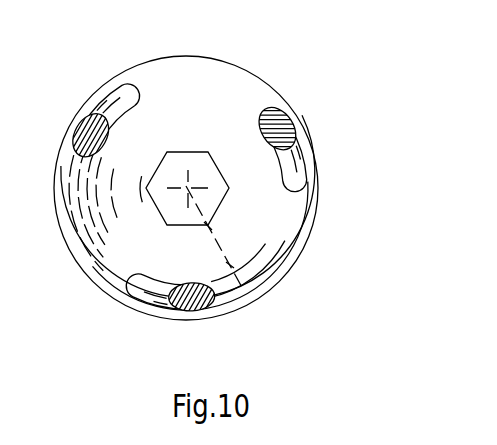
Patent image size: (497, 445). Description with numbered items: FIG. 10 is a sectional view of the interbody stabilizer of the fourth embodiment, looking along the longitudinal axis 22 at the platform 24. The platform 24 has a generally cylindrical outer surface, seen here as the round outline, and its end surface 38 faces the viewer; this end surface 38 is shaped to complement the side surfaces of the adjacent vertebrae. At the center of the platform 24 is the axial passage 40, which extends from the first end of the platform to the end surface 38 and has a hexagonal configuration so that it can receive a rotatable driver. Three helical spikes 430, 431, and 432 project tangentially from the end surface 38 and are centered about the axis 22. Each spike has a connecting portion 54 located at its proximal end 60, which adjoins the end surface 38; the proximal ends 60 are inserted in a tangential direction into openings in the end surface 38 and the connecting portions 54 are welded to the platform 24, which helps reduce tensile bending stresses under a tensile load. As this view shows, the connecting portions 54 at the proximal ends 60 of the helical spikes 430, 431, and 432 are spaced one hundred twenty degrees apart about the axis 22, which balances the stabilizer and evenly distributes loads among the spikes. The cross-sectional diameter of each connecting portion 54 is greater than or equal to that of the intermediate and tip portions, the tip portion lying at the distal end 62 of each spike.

The longitudinal axis 22 is at (244, 293).
The platform 24 is at (306, 262).
The end surface 38 is at (243, 100).
The axial passage 40 is at (196, 152).
The connecting portion 54 is at (96, 107).
The proximal end 60 is at (129, 92).
The distal end 62 is at (301, 203).
The helical spike 430 is at (194, 312).
The helical spike 431 is at (73, 140).
The helical spike 432 is at (283, 117).